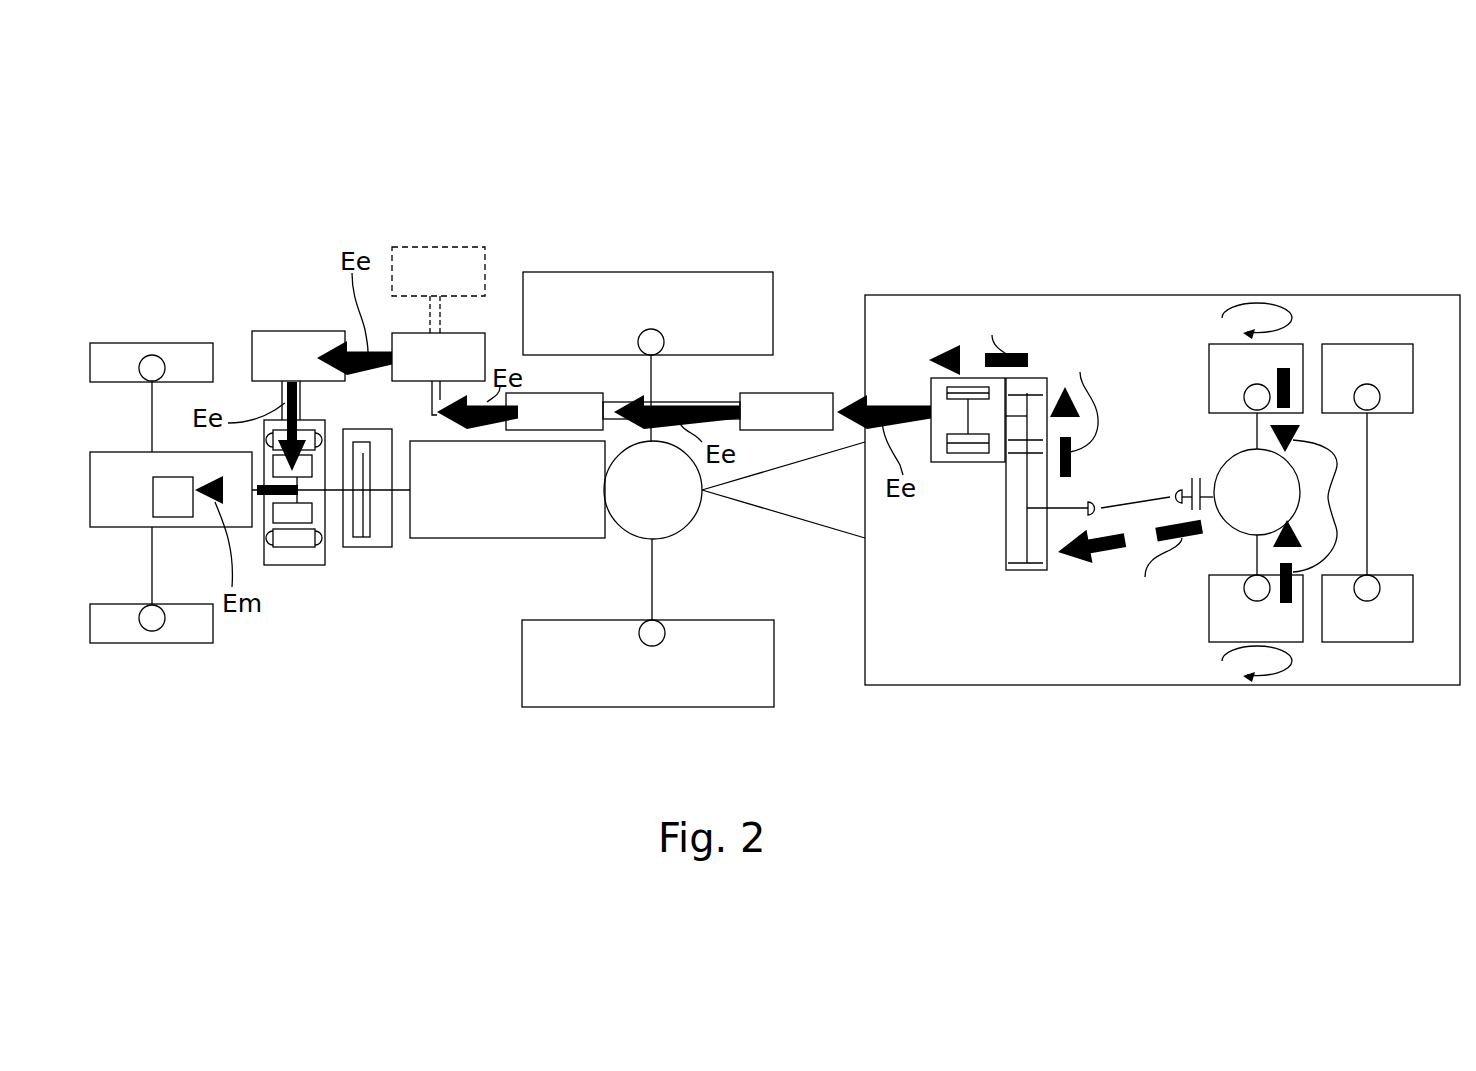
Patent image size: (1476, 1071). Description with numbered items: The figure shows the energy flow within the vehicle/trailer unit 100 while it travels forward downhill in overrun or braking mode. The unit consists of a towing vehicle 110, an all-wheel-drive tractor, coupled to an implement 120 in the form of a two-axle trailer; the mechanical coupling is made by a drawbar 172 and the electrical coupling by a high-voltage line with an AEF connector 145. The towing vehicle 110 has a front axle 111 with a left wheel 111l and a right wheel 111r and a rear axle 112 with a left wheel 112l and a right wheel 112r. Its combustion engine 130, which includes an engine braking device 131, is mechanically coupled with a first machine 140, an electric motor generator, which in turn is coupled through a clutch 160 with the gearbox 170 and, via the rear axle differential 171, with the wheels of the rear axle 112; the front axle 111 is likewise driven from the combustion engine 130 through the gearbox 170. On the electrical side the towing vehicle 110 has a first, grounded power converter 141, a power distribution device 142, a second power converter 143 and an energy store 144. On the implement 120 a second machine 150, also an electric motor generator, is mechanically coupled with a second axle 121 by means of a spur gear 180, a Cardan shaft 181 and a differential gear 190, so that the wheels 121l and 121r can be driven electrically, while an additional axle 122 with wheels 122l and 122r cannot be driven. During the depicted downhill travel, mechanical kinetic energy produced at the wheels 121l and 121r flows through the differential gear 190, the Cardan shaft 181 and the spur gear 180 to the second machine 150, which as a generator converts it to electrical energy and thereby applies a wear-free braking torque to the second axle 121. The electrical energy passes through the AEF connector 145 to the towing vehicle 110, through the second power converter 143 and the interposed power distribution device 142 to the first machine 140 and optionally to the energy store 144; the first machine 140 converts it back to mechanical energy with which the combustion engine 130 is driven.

The vehicle/trailer unit 100 is at (788, 154).
The towing vehicle 110 is at (404, 752).
The front axle 111 is at (148, 290).
The right wheel 111r is at (185, 357).
The left wheel 111l is at (178, 623).
The rear axle 112 is at (622, 240).
The right wheel 112r is at (737, 322).
The left wheel 112l is at (740, 680).
The implement 120 is at (950, 663).
The second axle 121 is at (1251, 264).
The right wheel 121r is at (1268, 385).
The left wheel 121l is at (1267, 635).
The additional axle 122 is at (1368, 264).
The right wheel 122r is at (1392, 385).
The left wheel 122l is at (1387, 635).
The combustion engine 130 is at (146, 508).
The engine braking device 131 is at (180, 503).
The first machine 140 is at (293, 533).
The first, grounded power converter 141 is at (282, 345).
The power distribution device 142 is at (480, 372).
The second power converter 143 is at (592, 427).
The energy store 144 is at (460, 287).
The AEF connector 145 is at (807, 427).
The second machine 150 is at (962, 450).
The clutch 160 is at (363, 537).
The gearbox 170 is at (525, 508).
The rear axle differential 171 is at (675, 503).
The drawbar 172 is at (832, 508).
The spur gear 180 is at (1043, 383).
The Cardan shaft 181 is at (1120, 503).
The differential gear 190 is at (1280, 503).